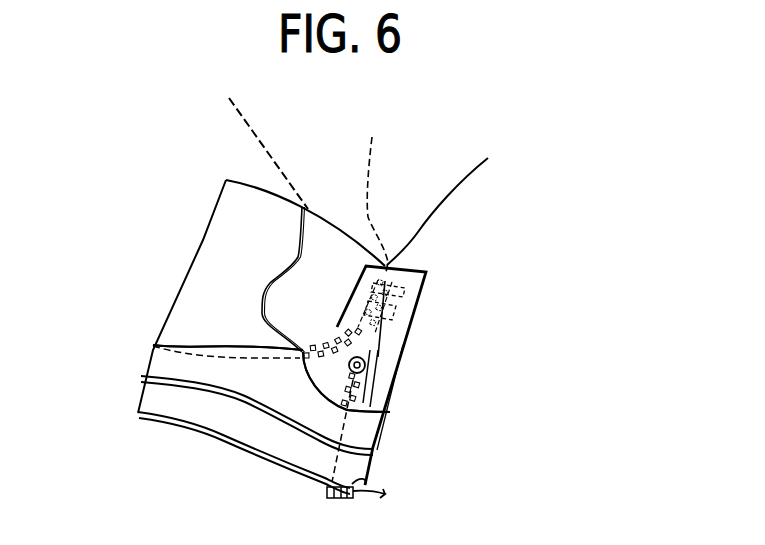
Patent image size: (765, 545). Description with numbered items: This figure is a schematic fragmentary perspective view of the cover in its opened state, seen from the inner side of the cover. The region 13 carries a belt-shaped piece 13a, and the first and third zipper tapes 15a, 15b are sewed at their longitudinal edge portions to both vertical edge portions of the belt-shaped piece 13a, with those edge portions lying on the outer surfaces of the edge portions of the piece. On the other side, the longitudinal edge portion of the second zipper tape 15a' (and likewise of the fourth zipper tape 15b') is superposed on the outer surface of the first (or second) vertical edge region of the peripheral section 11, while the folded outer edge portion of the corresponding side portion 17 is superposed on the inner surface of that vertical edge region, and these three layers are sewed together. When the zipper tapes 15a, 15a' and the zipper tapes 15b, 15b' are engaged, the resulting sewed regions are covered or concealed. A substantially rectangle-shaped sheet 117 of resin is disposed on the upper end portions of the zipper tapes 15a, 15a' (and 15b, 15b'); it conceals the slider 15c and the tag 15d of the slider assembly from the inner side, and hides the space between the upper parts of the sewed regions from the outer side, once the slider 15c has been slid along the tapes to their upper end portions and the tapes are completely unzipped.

The peripheral section 11 is at (562, 330).
The fold line of pocket 13 is at (303, 136).
The belt-shaped piece 13a is at (167, 210).
The first zipper tape 15a is at (164, 309).
The third zipper tape 15b is at (228, 347).
The second zipper tape 15a' is at (503, 383).
The fourth zipper tape 15b' is at (346, 382).
The slider 15c is at (415, 297).
The tag 15d is at (376, 339).
The resin sheet 117 is at (350, 300).
The side portion 17 is at (232, 420).